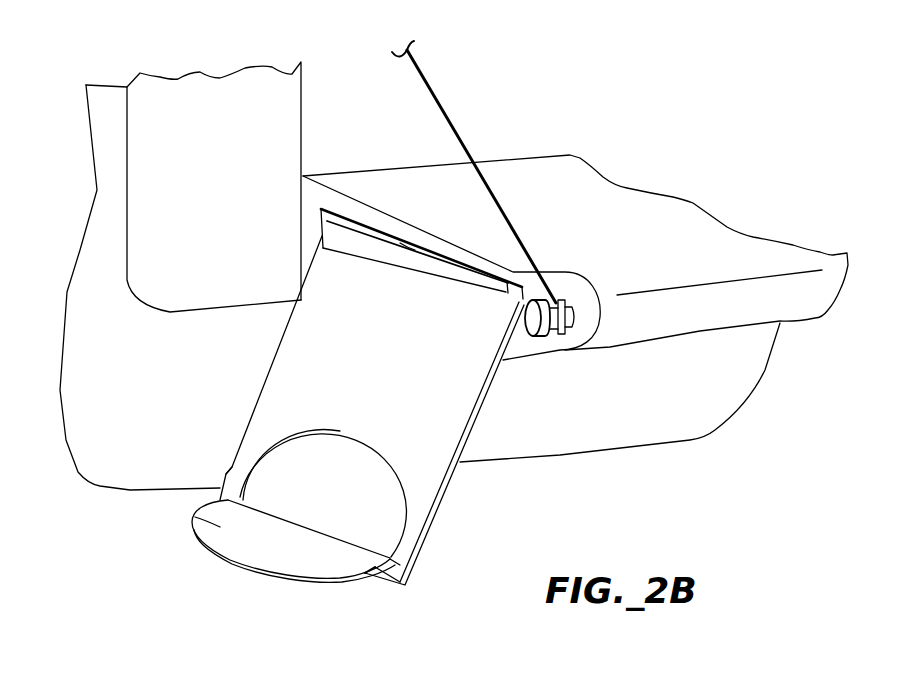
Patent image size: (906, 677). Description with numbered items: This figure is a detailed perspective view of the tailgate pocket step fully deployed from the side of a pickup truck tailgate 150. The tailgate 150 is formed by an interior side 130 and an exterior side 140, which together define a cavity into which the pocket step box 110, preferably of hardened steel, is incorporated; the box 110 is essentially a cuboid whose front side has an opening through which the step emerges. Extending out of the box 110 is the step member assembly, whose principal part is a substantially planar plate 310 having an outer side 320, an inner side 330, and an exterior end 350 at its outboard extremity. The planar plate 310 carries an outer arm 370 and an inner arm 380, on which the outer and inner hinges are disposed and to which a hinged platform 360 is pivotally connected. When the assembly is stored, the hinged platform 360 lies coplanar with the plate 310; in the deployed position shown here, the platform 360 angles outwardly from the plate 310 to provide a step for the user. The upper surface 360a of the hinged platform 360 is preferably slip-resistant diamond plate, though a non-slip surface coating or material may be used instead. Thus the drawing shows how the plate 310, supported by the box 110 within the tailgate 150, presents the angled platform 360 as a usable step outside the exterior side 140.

The pocket step box 110 is at (347, 217).
The interior side 130 is at (568, 172).
The exterior side 140 is at (640, 346).
The pickup truck tailgate 150 is at (715, 310).
The substantially planar plate 310 is at (471, 406).
The outer side 320 is at (462, 460).
The inner side 330 is at (262, 375).
The exterior end 350 is at (376, 577).
The hinged platform 360 is at (207, 506).
The upper surface 360a is at (296, 550).
The outer arm 370 is at (423, 550).
The inner arm 380 is at (237, 468).